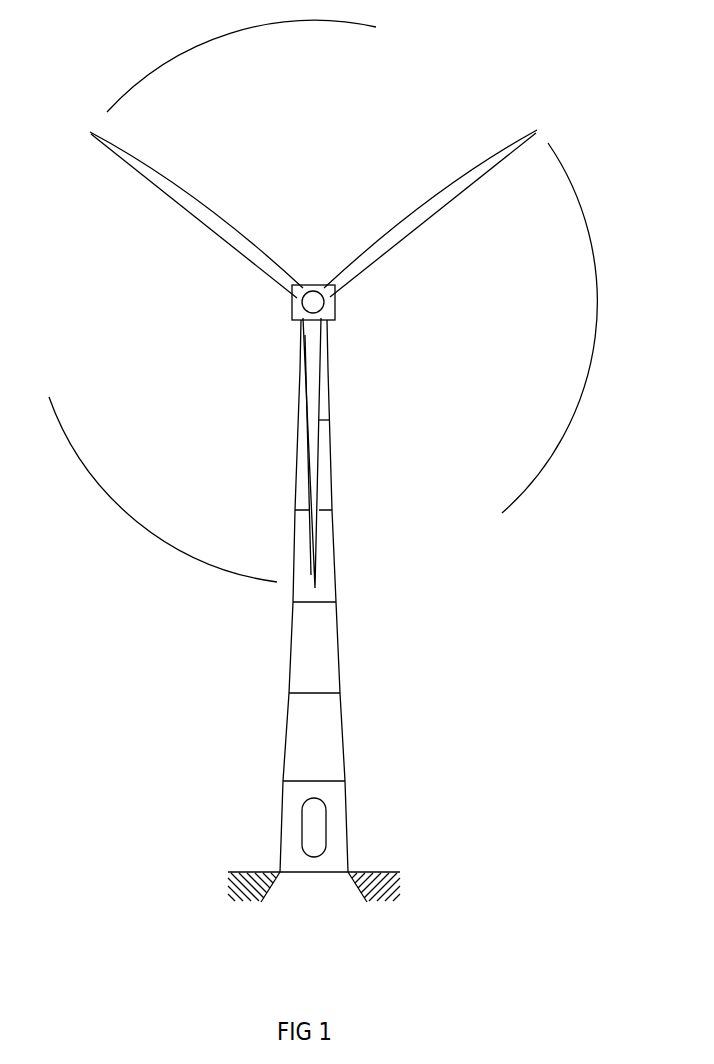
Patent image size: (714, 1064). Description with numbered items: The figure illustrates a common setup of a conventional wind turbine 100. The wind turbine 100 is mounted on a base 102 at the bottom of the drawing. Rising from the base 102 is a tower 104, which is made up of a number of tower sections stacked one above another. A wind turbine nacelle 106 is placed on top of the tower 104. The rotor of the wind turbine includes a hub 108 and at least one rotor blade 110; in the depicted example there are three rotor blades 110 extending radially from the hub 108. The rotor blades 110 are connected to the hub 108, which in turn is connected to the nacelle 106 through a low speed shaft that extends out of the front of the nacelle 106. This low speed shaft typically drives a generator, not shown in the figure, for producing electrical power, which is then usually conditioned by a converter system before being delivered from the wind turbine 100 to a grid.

The wind turbine 100 is at (323, 446).
The base 102 is at (257, 893).
The tower 104 is at (337, 643).
The wind turbine nacelle 106 is at (338, 311).
The hub 108 is at (300, 312).
The rotor blade 110 is at (322, 488).